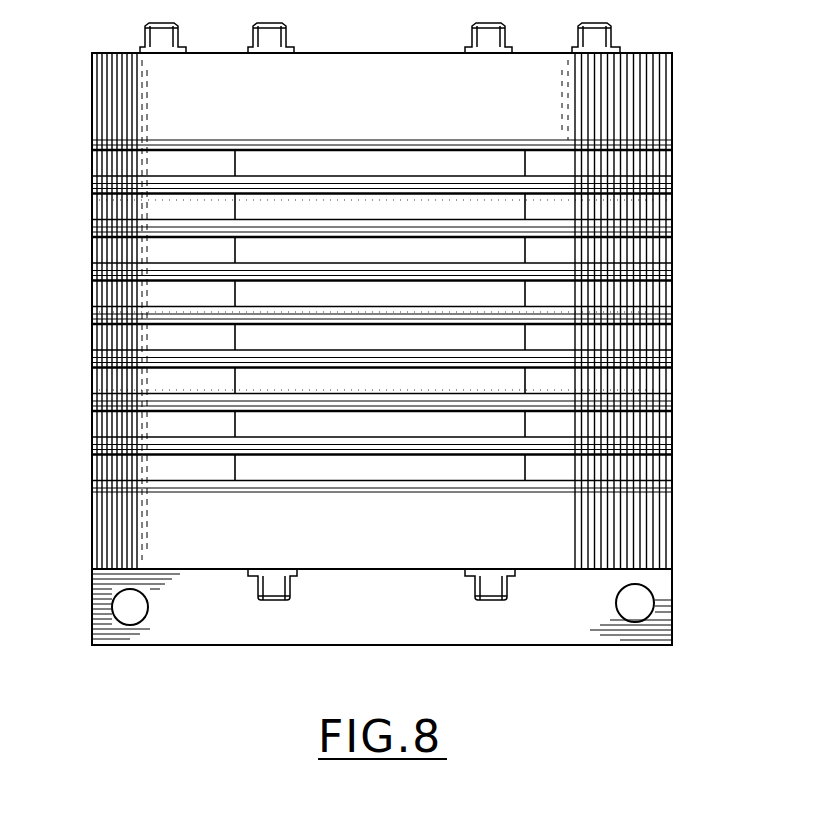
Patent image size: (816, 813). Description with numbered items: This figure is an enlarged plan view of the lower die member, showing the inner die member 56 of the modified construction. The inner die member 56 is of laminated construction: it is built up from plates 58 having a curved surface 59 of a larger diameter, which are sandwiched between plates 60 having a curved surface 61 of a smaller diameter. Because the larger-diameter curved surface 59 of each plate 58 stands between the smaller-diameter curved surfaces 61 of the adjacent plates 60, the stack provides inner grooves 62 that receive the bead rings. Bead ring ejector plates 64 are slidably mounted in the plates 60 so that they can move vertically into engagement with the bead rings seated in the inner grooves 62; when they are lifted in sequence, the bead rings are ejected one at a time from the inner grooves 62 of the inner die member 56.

The inner die member 56 is at (672, 330).
The plate 58 is at (672, 182).
The curved surface 59 is at (143, 205).
The plate 60 is at (672, 150).
The curved surface 61 is at (672, 200).
The inner groove 62 is at (103, 203).
The bead ring ejector plate 64 is at (338, 293).